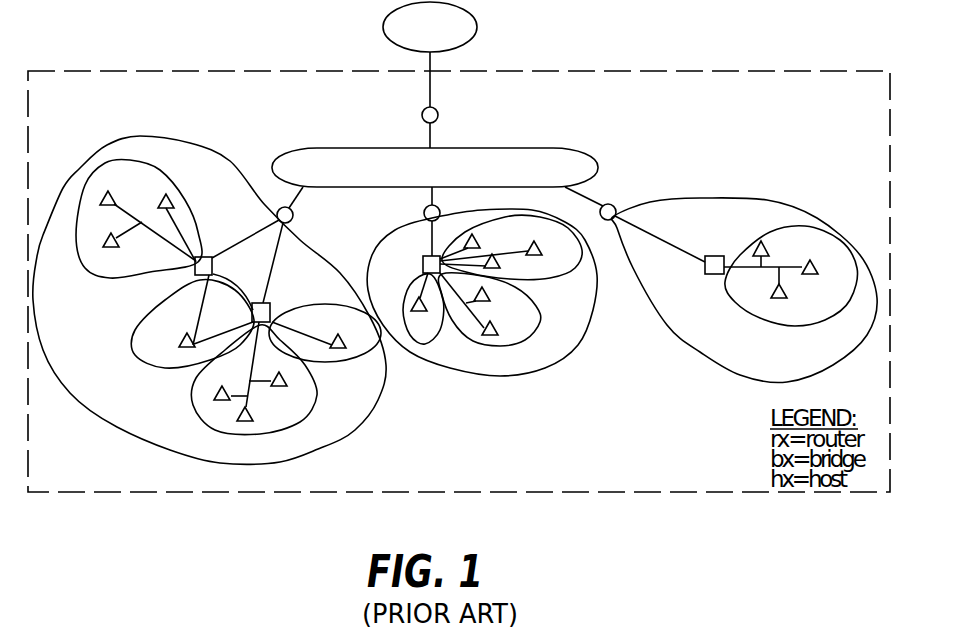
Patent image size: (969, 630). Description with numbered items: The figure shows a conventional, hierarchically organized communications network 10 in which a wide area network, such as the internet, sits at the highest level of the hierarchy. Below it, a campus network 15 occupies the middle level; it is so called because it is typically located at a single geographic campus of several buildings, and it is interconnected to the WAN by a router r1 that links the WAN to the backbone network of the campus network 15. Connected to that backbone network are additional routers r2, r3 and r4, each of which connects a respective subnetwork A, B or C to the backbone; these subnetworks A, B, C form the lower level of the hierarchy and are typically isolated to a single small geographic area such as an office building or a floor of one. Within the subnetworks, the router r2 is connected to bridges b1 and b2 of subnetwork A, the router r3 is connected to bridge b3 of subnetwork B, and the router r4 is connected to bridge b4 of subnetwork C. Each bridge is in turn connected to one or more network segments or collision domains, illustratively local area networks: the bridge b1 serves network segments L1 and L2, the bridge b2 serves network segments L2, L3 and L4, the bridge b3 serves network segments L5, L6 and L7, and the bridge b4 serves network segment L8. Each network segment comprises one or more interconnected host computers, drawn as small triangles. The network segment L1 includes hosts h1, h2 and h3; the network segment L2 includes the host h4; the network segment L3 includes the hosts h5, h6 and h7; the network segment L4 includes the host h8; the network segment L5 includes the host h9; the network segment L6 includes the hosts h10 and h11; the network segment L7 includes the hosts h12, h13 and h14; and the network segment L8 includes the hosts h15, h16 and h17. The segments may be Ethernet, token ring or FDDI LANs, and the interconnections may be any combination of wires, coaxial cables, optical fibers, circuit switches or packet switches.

The communications network 10 is at (246, 38).
The campus network 15 is at (694, 70).
The subnetwork A is at (141, 135).
The subnetwork B is at (516, 376).
The subnetwork C is at (677, 337).
The router r1 is at (442, 107).
The router r2 is at (265, 245).
The router r3 is at (443, 221).
The router r4 is at (635, 222).
The bridge b1 is at (210, 256).
The bridge b2 is at (270, 305).
The bridge b3 is at (422, 262).
The bridge b4 is at (714, 256).
The network segment L1 is at (96, 280).
The network segment L2 is at (138, 367).
The network segment L3 is at (198, 415).
The network segment L4 is at (352, 362).
The network segment L5 is at (428, 343).
The network segment L6 is at (547, 322).
The network segment L7 is at (550, 278).
The network segment L8 is at (760, 326).
The host computer h1 is at (116, 182).
The host computer h2 is at (166, 209).
The host computer h3 is at (108, 247).
The host computer h4 is at (182, 345).
The host computer h5 is at (214, 394).
The host computer h6 is at (250, 415).
The host computer h7 is at (283, 385).
The host computer h8 is at (345, 328).
The host computer h9 is at (420, 312).
The host computer h10 is at (500, 328).
The host computer h11 is at (492, 296).
The host computer h12 is at (503, 262).
The host computer h13 is at (484, 237).
The host computer h14 is at (546, 250).
The host computer h15 is at (772, 247).
The host computer h16 is at (821, 275).
The host computer h17 is at (788, 296).